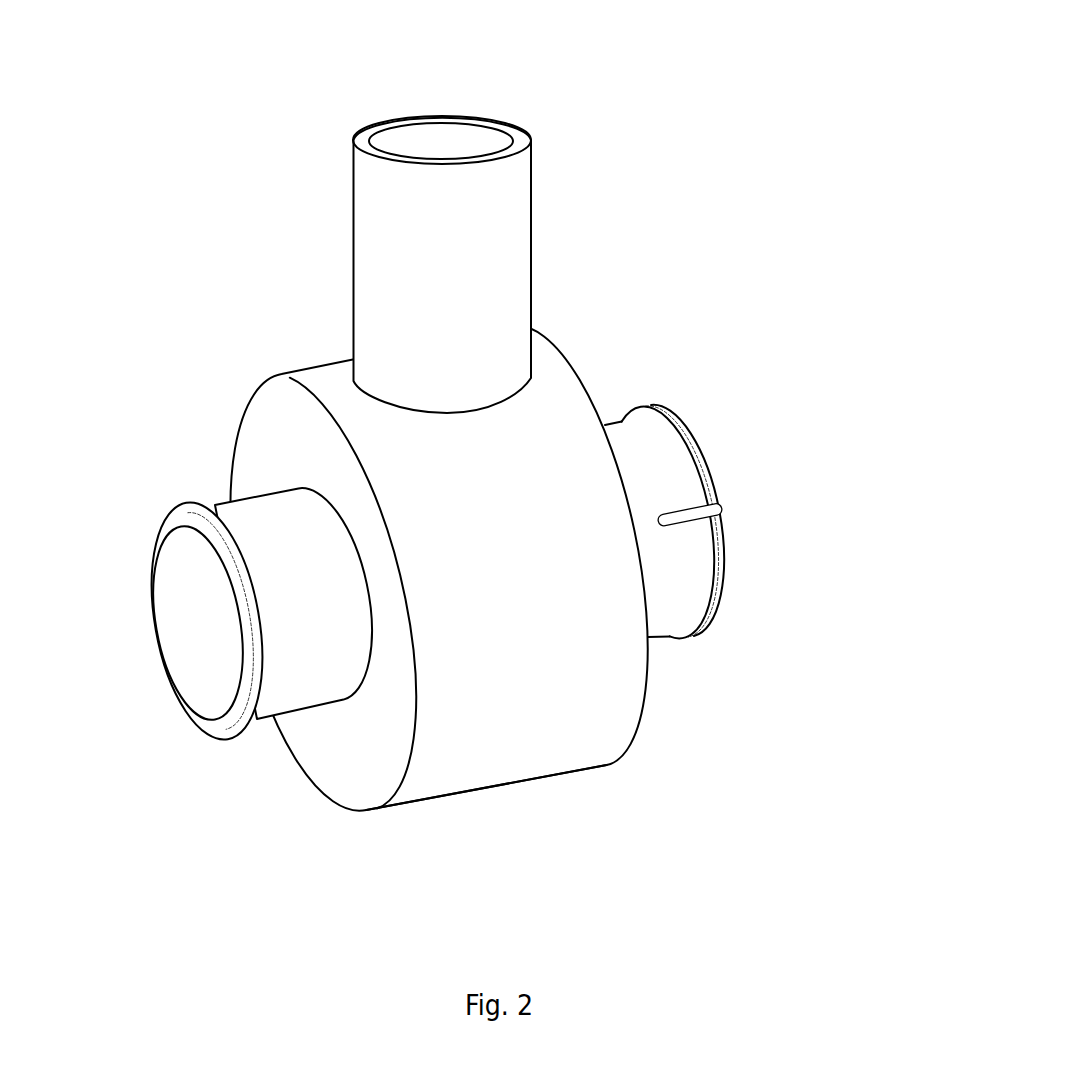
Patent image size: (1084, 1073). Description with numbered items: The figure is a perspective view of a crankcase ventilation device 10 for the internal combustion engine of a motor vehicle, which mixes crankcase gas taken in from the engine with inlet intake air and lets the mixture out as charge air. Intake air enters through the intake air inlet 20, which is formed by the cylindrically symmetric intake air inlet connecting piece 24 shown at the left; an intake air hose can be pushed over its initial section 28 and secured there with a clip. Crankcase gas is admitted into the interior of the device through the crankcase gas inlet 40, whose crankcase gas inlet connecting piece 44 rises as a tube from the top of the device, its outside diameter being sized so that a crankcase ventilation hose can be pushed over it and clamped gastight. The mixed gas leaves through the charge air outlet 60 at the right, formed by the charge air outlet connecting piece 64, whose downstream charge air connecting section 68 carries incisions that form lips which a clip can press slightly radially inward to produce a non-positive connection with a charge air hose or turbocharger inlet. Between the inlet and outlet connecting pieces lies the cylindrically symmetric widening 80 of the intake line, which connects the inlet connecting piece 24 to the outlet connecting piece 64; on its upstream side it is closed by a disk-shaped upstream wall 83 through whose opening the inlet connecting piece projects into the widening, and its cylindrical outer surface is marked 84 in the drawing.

The crankcase ventilation device 10 is at (455, 459).
The intake air inlet 20 is at (186, 629).
The intake air inlet connecting piece 24 is at (288, 680).
The initial section 28 is at (220, 750).
The crankcase gas inlet 40 is at (443, 138).
The crankcase gas inlet connecting piece 44 is at (375, 266).
The charge air outlet 60 is at (728, 505).
The charge air outlet connecting piece 64 is at (665, 460).
The charge air connecting section 68 is at (663, 663).
The widening 80 is at (518, 755).
The upstream wall 83 is at (263, 432).
The cylindrical side wall 84 is at (523, 587).